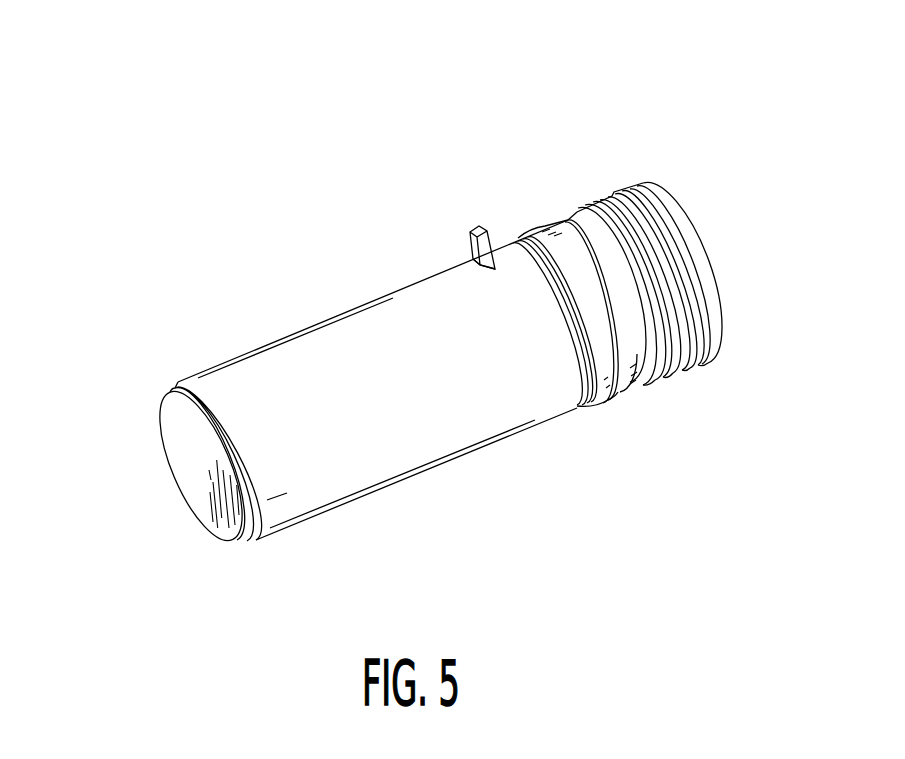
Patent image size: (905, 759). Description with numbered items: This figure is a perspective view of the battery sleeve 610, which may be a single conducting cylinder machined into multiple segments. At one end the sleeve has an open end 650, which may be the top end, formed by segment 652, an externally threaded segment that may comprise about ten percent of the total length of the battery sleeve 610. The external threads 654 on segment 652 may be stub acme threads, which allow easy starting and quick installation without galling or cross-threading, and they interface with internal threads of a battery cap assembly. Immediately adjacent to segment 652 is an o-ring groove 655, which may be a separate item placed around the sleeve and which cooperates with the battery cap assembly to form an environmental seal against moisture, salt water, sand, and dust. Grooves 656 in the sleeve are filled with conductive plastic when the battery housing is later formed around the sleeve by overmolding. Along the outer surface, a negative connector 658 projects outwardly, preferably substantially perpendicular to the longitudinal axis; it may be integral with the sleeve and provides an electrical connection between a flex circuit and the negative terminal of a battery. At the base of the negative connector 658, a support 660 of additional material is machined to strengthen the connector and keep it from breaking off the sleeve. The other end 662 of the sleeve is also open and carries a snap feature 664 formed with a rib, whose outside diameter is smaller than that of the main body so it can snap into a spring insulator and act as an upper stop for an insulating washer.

The battery sleeve 610 is at (411, 308).
The open end 650 is at (712, 269).
The segment 652 is at (690, 370).
The external threads 654 is at (665, 232).
The o-ring groove 655 is at (658, 401).
The grooves 656 is at (586, 419).
The negative connector 658 is at (467, 209).
The support 660 is at (494, 272).
The other end 662 is at (158, 489).
The snap feature 664 is at (158, 385).